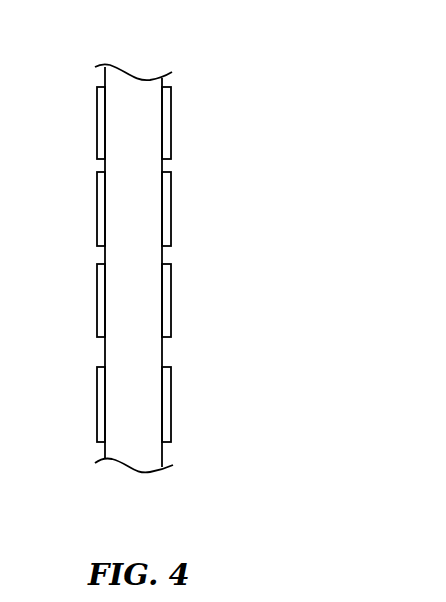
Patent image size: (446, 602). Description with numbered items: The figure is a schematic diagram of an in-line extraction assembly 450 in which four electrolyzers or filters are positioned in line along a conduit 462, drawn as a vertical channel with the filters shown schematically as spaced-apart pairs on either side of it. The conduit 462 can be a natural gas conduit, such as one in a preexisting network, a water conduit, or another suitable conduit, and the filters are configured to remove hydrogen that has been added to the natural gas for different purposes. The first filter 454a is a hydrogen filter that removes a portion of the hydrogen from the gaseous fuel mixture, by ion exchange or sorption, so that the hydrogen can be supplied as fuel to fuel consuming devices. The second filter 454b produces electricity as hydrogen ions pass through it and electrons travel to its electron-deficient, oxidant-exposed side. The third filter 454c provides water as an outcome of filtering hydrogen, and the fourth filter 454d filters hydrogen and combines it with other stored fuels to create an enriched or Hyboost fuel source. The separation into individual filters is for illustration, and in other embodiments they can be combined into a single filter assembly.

The in-line extraction assembly 450 is at (61, 127).
The conduit 462 is at (133, 102).
The first filter 454a is at (167, 118).
The second filter 454b is at (166, 209).
The third filter 454c is at (167, 305).
The fourth filter 454d is at (167, 408).